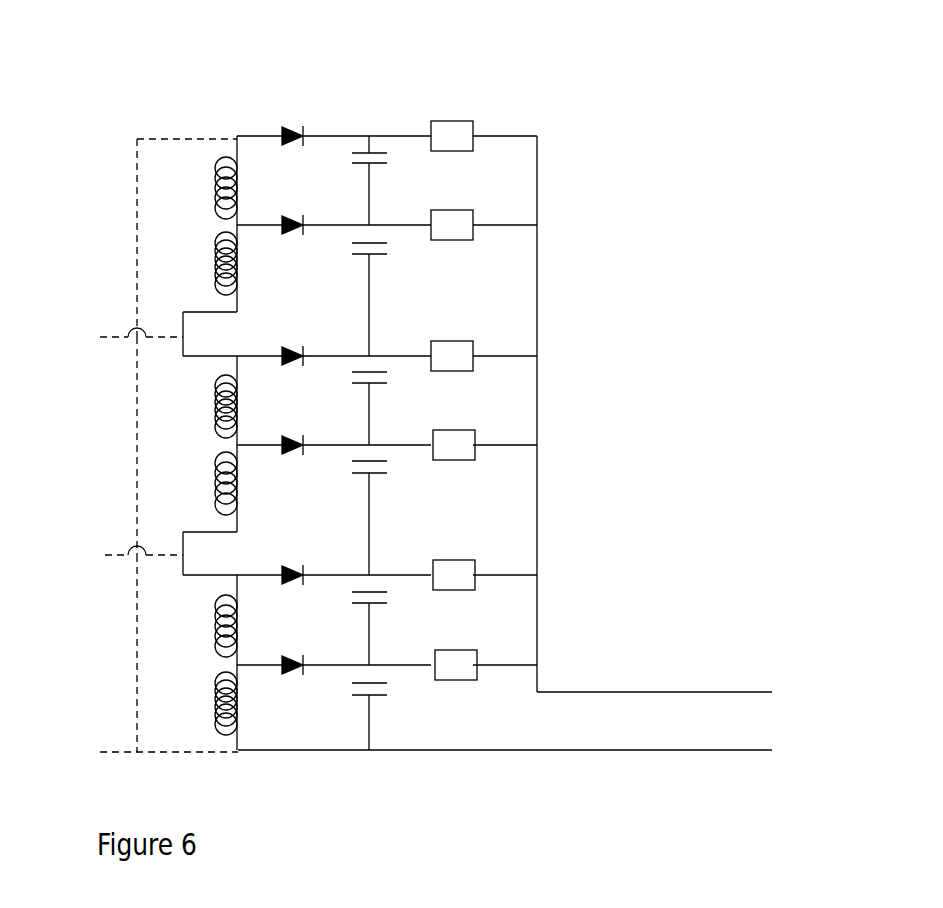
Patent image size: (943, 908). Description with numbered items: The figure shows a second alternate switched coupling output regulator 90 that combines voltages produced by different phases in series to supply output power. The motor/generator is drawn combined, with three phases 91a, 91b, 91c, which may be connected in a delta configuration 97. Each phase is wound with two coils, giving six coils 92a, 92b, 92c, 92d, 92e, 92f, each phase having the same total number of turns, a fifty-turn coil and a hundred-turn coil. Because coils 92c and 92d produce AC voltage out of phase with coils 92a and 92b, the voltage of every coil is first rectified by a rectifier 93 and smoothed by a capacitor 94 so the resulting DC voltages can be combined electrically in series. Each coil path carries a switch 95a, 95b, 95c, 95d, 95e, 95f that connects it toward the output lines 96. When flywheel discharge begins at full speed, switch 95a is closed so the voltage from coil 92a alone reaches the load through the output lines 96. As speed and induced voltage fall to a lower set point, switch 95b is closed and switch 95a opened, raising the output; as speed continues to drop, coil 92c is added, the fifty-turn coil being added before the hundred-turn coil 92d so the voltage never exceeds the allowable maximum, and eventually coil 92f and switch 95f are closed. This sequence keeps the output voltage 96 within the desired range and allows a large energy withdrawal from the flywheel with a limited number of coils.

The switched coupling output regulator 90 is at (358, 42).
The first phase 91a is at (110, 217).
The second phase 91b is at (115, 428).
The third phase 91c is at (130, 680).
The coil 92a is at (235, 720).
The coil 92b is at (235, 630).
The coil 92c is at (235, 502).
The coil 92d is at (235, 406).
The coil 92e is at (235, 276).
The coil 92f is at (235, 190).
The rectifier 93 is at (293, 455).
The capacitor 94 is at (380, 592).
The switch 95a is at (472, 680).
The switch 95b is at (470, 590).
The switch 95c is at (470, 460).
The switch 95d is at (468, 371).
The switch 95e is at (468, 240).
The switch 95f is at (468, 151).
The output lines 96 is at (776, 718).
The delta configuration 97 is at (183, 560).